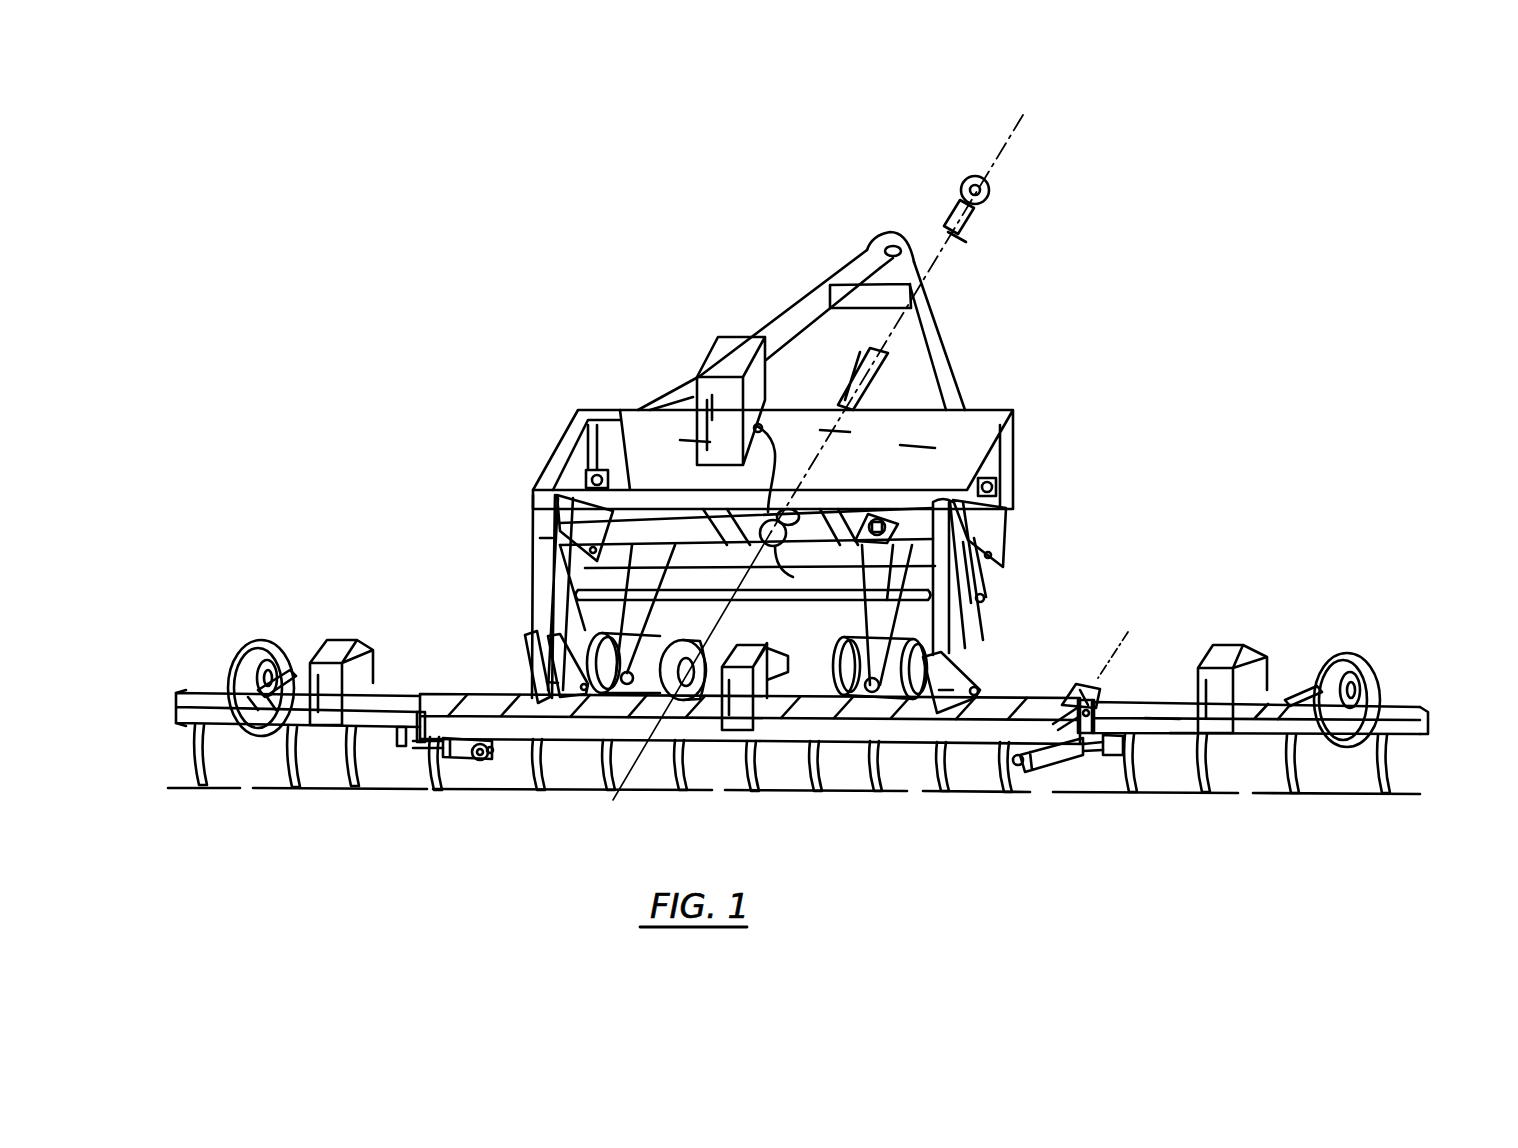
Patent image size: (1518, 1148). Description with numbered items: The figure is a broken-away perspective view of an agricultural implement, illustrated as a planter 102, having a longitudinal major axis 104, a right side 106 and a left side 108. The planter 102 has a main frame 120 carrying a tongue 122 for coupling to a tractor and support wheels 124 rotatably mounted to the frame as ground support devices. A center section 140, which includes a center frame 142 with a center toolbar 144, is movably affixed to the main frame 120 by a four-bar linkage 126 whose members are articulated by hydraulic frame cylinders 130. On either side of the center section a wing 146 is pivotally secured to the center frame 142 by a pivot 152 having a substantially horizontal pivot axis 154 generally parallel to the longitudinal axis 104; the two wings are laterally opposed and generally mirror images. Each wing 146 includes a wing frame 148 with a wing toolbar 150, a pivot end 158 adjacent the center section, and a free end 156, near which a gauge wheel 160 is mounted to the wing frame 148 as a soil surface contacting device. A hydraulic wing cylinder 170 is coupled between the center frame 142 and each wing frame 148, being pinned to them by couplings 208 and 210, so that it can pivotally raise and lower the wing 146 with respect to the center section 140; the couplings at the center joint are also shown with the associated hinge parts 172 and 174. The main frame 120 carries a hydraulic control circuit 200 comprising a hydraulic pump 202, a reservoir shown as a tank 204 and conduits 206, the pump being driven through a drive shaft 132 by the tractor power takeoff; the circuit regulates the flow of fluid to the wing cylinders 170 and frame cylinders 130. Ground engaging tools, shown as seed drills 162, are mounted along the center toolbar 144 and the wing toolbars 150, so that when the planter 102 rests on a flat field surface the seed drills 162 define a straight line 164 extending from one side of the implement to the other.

The planter 102 is at (568, 268).
The longitudinal major axis 104 is at (1014, 131).
The right side 106 is at (1256, 706).
The left side 108 is at (303, 619).
The main frame 120 is at (782, 462).
The tongue 122 is at (873, 250).
The support wheels 124 is at (620, 636).
The four-bar linkage 126 is at (515, 568).
The hydraulic frame cylinder 130 is at (590, 478).
The drive shaft 132 is at (880, 360).
The center section 140 is at (752, 750).
The center frame 142 is at (845, 755).
The center toolbar 144 is at (907, 742).
The wing 146 is at (1158, 748).
The wing frame 148 is at (1182, 742).
The wing toolbar 150 is at (235, 727).
The pivot 152 is at (1085, 698).
The pivot axis 154 is at (1128, 630).
The free end 156 is at (184, 693).
The pivot end 158 is at (1110, 686).
The gauge wheel 160 is at (252, 648).
The seed drills 162 is at (291, 775).
The straight line 164 is at (1405, 793).
The hydraulic wing cylinder 170 is at (466, 768).
The left hinge joint 172 is at (418, 766).
The cylinder pivot plate 174 is at (481, 768).
The hydraulic control circuit 200 is at (742, 428).
The hydraulic pump 202 is at (793, 577).
The tank 204 is at (726, 360).
The conduits 206 is at (763, 448).
The coupling 208 is at (398, 742).
The coupling 210 is at (491, 756).